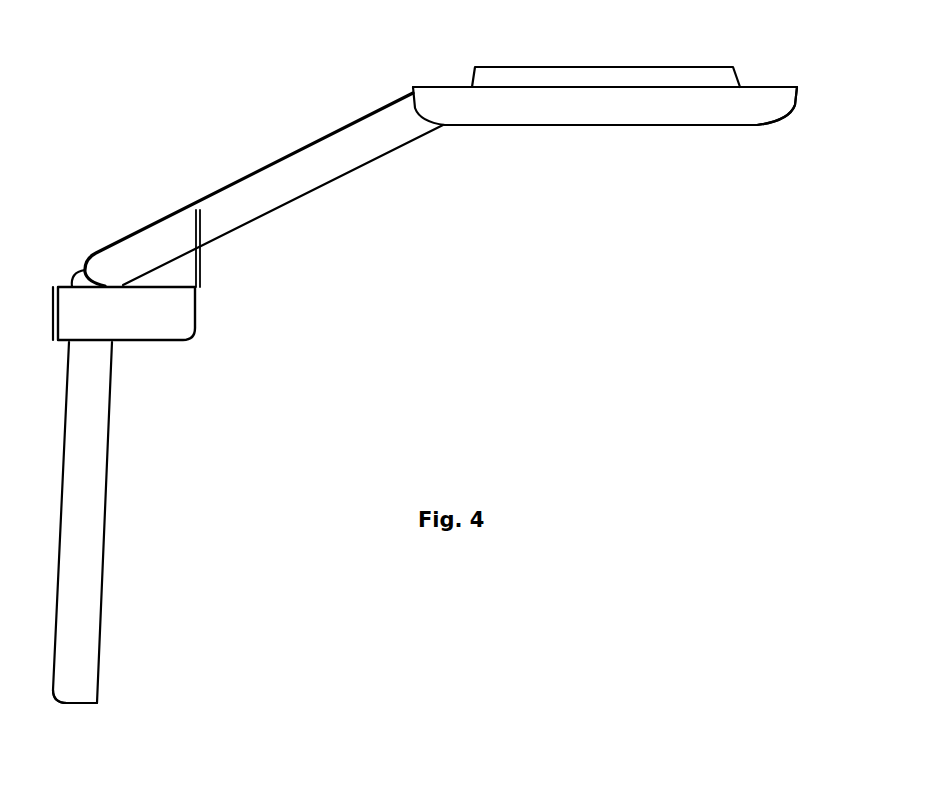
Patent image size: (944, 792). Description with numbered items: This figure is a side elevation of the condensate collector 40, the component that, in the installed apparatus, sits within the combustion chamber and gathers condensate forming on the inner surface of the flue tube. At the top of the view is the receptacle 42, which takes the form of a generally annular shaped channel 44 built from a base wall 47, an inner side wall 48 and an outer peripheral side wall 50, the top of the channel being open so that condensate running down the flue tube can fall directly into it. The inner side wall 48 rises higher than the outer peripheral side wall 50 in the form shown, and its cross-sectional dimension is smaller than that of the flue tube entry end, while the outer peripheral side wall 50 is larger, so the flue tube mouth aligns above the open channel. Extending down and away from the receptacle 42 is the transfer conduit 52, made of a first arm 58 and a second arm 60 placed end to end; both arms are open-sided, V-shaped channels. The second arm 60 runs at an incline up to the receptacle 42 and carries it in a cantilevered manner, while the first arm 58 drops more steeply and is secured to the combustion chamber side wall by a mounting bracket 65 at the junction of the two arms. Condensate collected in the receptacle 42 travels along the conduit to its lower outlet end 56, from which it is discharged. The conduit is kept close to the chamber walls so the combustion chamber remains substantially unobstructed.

The condensate collector 40 is at (393, 218).
The receptacle 42 is at (675, 127).
The channel 44 is at (502, 126).
The base wall 47 is at (567, 126).
The inner side wall 48 is at (473, 72).
The outer peripheral side wall 50 is at (797, 88).
The transfer conduit 52 is at (212, 188).
The outlet end 56 is at (77, 697).
The first arm 58 is at (113, 432).
The second arm 60 is at (270, 208).
The mounting bracket 65 is at (197, 307).